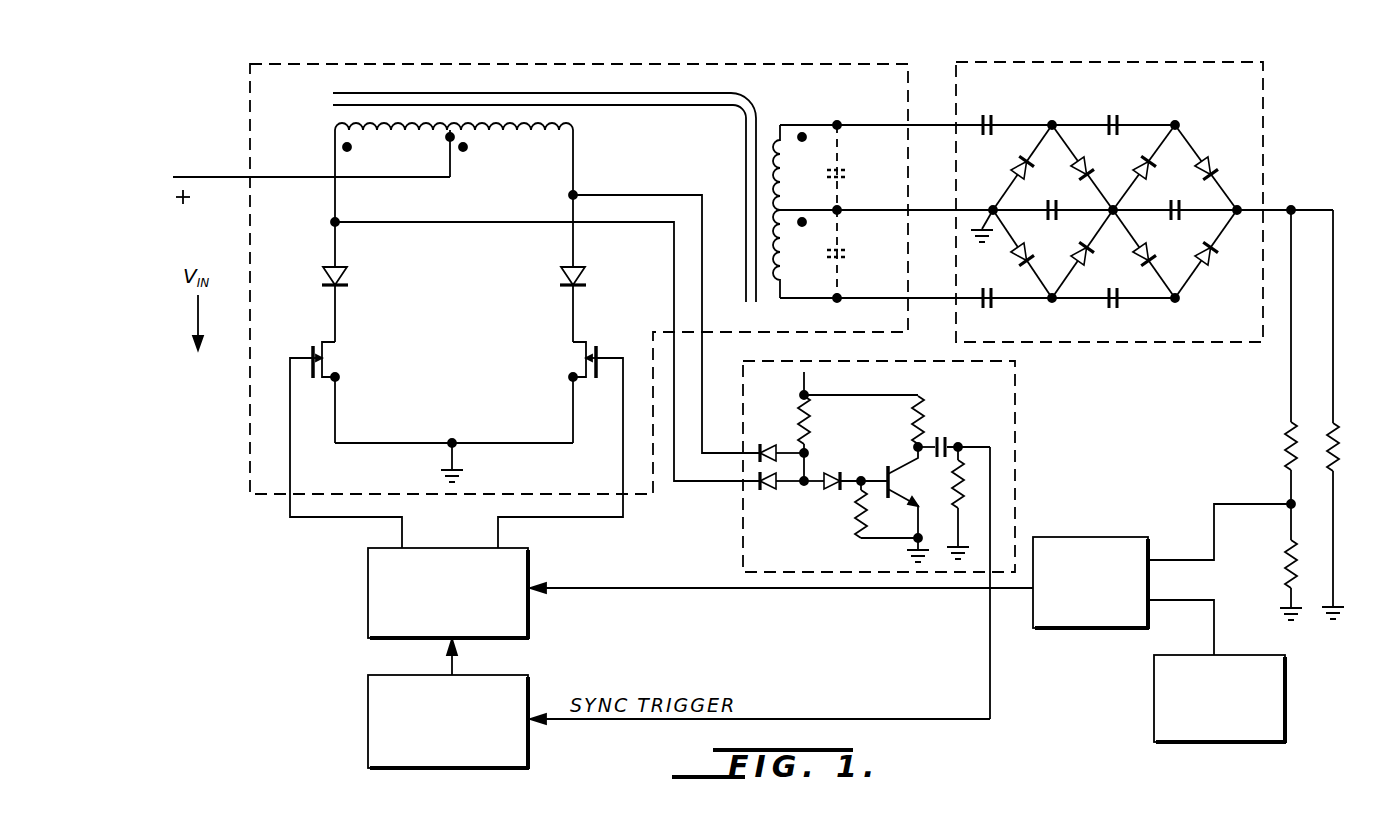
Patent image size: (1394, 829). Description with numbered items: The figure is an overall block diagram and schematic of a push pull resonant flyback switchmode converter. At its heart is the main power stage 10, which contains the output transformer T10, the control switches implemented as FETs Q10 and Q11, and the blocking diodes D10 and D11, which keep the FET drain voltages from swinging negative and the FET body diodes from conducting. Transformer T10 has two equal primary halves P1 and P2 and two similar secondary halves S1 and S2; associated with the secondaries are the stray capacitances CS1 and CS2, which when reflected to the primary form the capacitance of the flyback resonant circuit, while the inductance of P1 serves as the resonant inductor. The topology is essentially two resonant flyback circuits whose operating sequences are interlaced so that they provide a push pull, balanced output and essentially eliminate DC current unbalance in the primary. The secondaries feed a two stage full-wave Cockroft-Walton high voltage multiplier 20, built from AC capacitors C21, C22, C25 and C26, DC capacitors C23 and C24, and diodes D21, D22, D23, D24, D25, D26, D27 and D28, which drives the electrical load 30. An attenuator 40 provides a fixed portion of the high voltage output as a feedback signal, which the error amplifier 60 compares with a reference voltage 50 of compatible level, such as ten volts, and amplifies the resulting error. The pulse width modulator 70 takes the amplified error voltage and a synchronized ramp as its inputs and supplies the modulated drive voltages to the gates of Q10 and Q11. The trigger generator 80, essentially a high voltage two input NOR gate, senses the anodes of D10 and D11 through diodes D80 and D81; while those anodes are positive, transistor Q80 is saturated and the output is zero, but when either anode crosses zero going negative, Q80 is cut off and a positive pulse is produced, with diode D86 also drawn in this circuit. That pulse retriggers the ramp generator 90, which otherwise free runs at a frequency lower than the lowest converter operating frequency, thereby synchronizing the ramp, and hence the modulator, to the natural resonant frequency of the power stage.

The main power stage 10 is at (293, 106).
The high voltage multiplier 20 is at (1228, 102).
The electrical load 30 is at (1340, 452).
The attenuator 40 is at (1282, 452).
The reference voltage 50 is at (1195, 744).
The error amplifier 60 is at (1097, 630).
The pulse width modulator 70 is at (368, 603).
The trigger generator 80 is at (990, 397).
The ramp generator 90 is at (368, 718).
The output transformer T10 is at (574, 185).
The primary half P1 is at (398, 147).
The primary half P2 is at (516, 148).
The secondary half S1 is at (794, 167).
The secondary half S2 is at (794, 254).
The secondary winding stray capacitance CS1 is at (848, 254).
The secondary winding stray capacitance CS2 is at (849, 174).
The blocking diode D10 is at (348, 274).
The blocking diode D11 is at (562, 274).
The control switch Q10 is at (342, 353).
The control switch Q11 is at (568, 360).
The AC capacitor C21 is at (1002, 113).
The AC capacitor C22 is at (1122, 113).
The DC capacitor C23 is at (1062, 195).
The DC capacitor C24 is at (1186, 195).
The AC capacitor C25 is at (995, 306).
The AC capacitor C26 is at (1116, 306).
The multiplier diode D21 is at (1014, 170).
The multiplier diode D22 is at (1084, 163).
The multiplier diode D23 is at (1140, 173).
The multiplier diode D24 is at (1222, 156).
The multiplier diode D25 is at (1013, 252).
The multiplier diode D26 is at (1085, 258).
The multiplier diode D27 is at (1148, 254).
The multiplier diode D28 is at (1208, 263).
The trigger generator diode D80 is at (782, 440).
The trigger generator diode D81 is at (774, 490).
The zener diode D86 is at (830, 492).
The trigger generator transistor Q80 is at (905, 462).